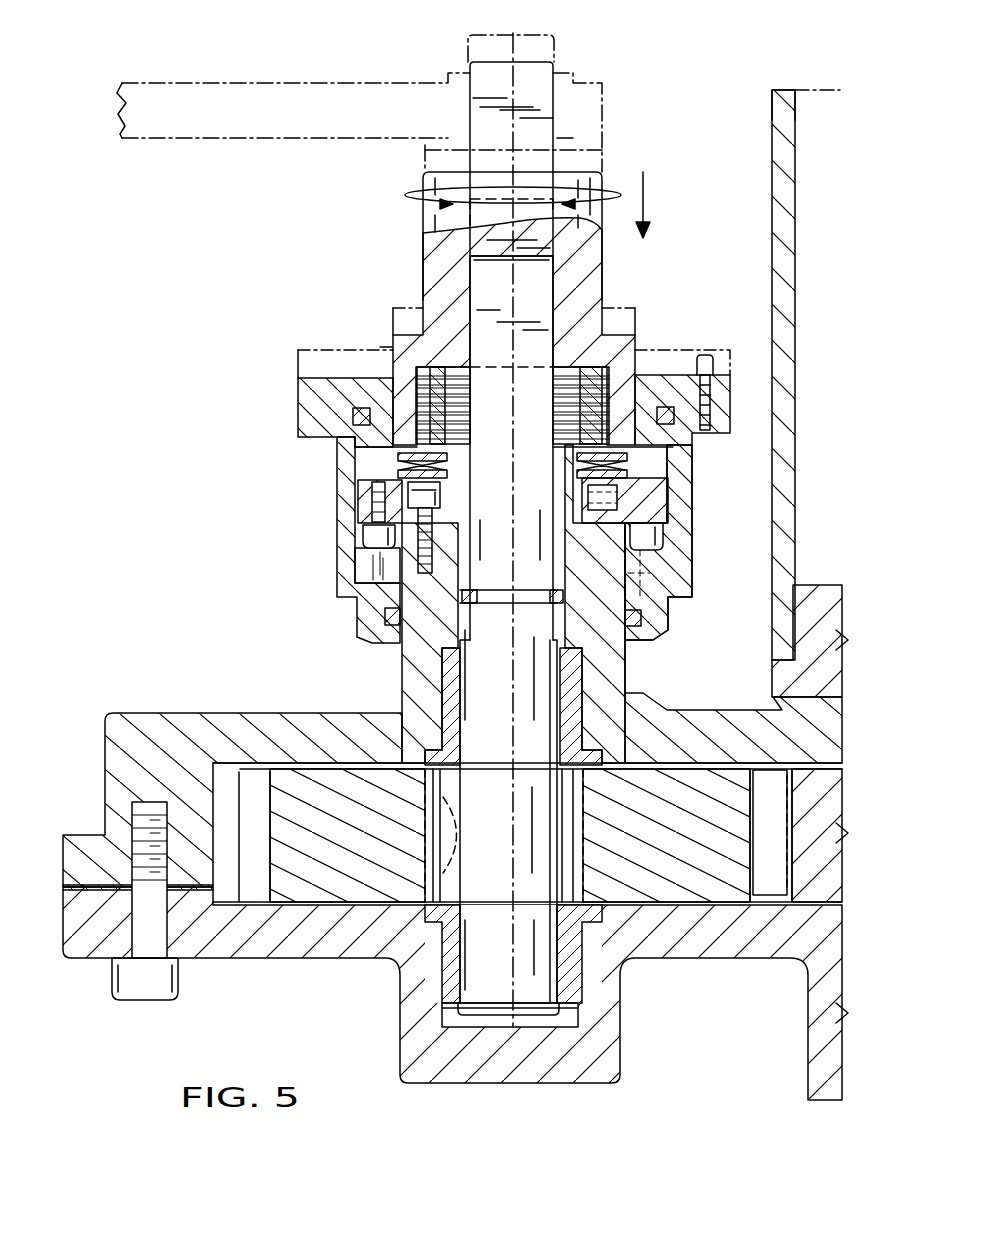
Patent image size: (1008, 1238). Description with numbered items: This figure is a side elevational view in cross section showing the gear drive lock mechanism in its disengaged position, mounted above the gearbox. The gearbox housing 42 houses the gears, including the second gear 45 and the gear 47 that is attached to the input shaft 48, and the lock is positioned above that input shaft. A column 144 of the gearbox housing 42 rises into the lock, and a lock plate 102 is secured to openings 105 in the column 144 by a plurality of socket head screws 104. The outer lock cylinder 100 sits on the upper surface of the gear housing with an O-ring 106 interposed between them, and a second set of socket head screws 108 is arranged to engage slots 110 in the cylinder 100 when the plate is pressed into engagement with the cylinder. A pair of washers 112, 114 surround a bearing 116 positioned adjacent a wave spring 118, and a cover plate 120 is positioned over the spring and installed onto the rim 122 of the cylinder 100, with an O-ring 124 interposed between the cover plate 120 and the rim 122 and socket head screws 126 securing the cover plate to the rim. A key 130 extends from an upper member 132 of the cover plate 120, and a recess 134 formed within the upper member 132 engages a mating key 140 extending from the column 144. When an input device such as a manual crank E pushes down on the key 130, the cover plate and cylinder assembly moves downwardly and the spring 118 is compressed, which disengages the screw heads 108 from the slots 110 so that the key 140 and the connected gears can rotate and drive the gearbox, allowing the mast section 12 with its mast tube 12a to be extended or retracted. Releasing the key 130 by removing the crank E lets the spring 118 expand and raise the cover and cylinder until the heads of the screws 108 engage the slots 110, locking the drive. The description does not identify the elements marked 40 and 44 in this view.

The manual crank E is at (275, 92).
The mast section 12 is at (765, 145).
The mast tube 12a is at (782, 112).
The lower housing half 40 is at (701, 915).
The gearbox housing 42 is at (171, 705).
The drive assembly 44 is at (285, 565).
The second gear 45 is at (812, 885).
The gear 47 is at (253, 893).
The input shaft 48 is at (553, 743).
The outer lock cylinder 100 is at (700, 548).
The lock plate 102 is at (668, 508).
The socket head screws 104 is at (418, 500).
The openings 105 is at (433, 550).
The O-ring 106 is at (386, 620).
The socket head screws 108 is at (374, 535).
The slots 110 is at (365, 570).
The washer 112 is at (632, 476).
The washer 114 is at (627, 454).
The bearing 116 is at (605, 463).
The wave spring 118 is at (420, 405).
The cover plate 120 is at (303, 392).
The rim 122 is at (733, 418).
The O-ring 124 is at (352, 417).
The socket head screws 126 is at (704, 365).
The key 130 is at (535, 75).
The upper member 132 is at (437, 247).
The recess 134 is at (556, 300).
The mating key 140 is at (487, 288).
The column 144 is at (408, 665).